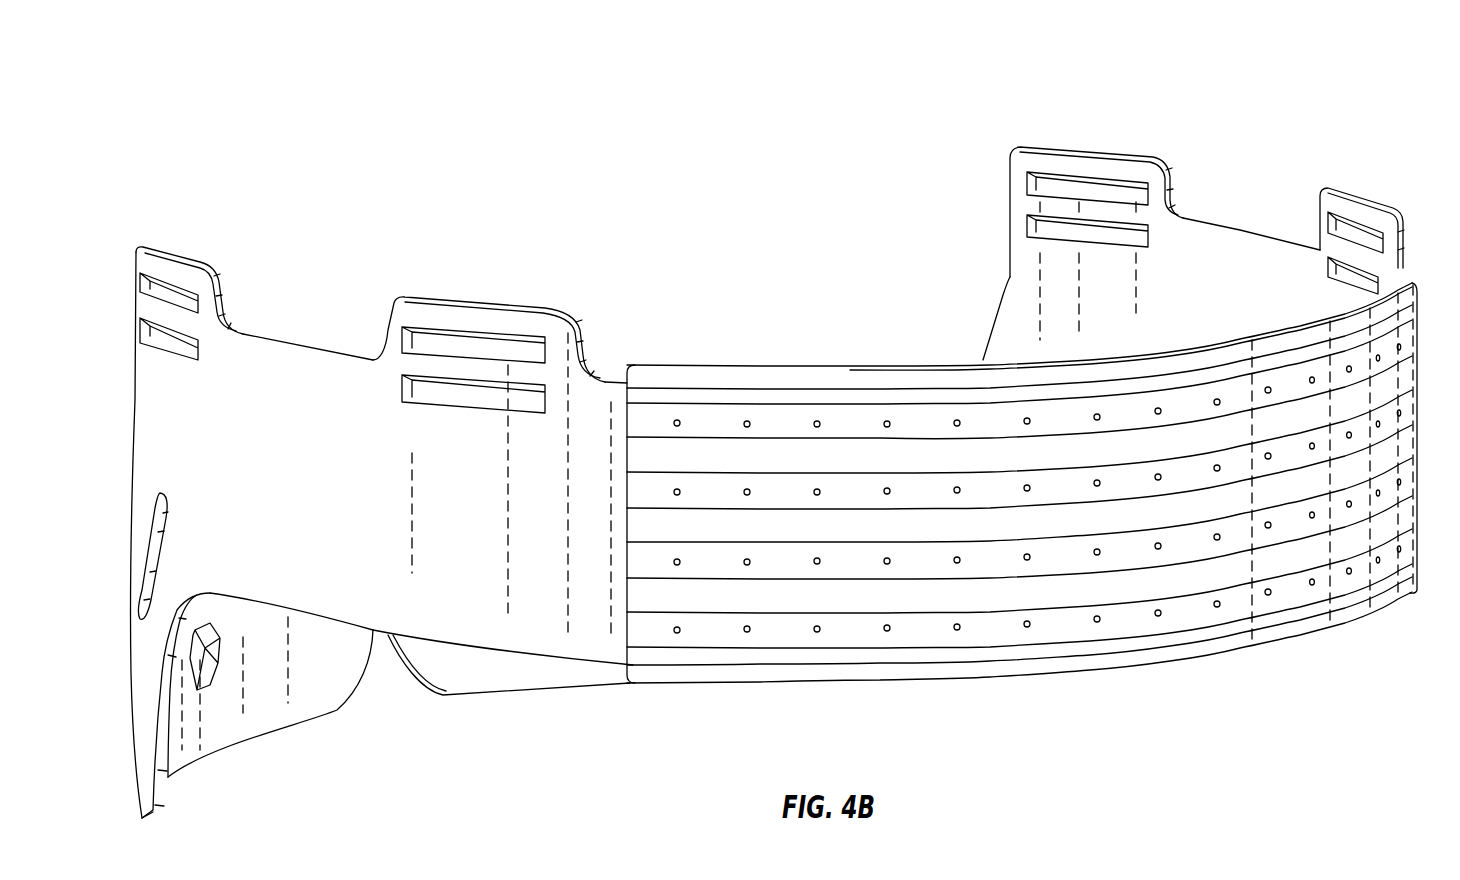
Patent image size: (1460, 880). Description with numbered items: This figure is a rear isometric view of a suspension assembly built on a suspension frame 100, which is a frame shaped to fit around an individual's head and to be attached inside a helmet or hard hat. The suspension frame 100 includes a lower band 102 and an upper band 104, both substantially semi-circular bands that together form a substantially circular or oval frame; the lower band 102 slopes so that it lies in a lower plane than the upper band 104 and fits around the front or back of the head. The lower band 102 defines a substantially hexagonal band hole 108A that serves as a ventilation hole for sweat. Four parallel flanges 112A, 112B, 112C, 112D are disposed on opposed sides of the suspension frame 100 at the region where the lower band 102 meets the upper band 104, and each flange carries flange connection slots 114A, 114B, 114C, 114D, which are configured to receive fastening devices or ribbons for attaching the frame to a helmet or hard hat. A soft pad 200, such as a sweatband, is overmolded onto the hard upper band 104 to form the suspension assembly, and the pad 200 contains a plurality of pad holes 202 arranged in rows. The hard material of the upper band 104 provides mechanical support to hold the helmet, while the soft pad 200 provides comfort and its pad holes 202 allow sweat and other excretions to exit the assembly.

The suspension frame 100 is at (193, 93).
The lower band 102 is at (306, 686).
The upper band 104 is at (527, 587).
The band hole 108A is at (200, 660).
The flange 112A is at (1357, 195).
The flange 112B is at (1047, 157).
The flange 112C is at (190, 280).
The flange 112D is at (528, 313).
The flange connection slot 114A is at (1367, 243).
The flange connection slot 114B is at (1108, 195).
The flange connection slot 114C is at (180, 295).
The flange connection slot 114D is at (455, 345).
The pad 200 is at (821, 376).
The pad holes 202 is at (677, 420).